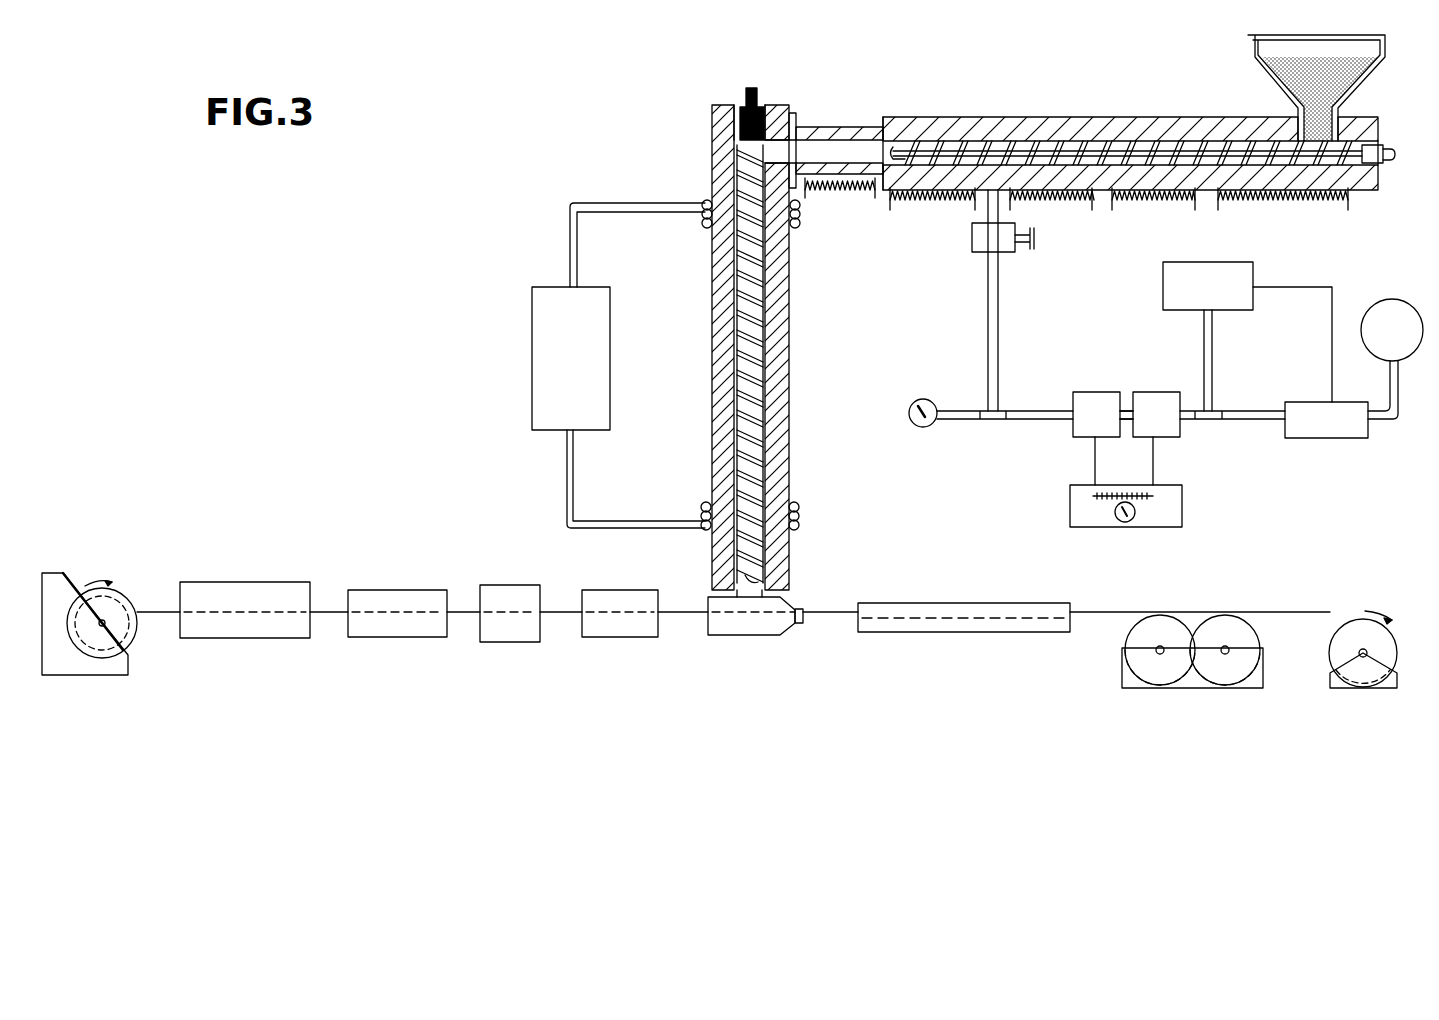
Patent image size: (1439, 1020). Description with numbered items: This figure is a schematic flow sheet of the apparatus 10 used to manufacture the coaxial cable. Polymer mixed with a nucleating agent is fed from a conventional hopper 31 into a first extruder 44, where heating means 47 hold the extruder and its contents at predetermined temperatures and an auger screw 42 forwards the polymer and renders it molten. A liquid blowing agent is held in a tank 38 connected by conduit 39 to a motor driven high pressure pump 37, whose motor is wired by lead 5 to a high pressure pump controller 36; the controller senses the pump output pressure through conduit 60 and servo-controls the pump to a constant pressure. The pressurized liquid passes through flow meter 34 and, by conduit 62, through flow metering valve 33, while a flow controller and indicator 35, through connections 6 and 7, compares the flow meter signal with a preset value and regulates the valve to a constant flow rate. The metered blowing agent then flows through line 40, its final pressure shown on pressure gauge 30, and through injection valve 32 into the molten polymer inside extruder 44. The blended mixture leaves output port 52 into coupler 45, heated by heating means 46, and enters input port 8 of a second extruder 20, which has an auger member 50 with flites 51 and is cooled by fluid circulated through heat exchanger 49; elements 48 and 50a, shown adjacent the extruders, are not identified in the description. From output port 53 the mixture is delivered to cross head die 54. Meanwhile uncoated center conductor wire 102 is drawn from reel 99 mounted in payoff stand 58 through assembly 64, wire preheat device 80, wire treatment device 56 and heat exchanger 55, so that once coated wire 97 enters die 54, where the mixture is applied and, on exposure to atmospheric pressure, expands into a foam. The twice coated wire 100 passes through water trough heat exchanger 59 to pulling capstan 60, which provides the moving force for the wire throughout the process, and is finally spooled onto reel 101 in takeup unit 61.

The apparatus 10 is at (615, 120).
The second extruder 20 is at (717, 104).
The input port 8 is at (806, 126).
The coupler 45 is at (833, 126).
The output port 52 is at (872, 126).
The first extruder 44 is at (1020, 116).
The auger screw 42 is at (1147, 140).
The hopper 31 is at (1252, 58).
The plastic material 50a is at (1334, 99).
The heating means 46 is at (855, 196).
The heating means 47 is at (924, 205).
The guide rollers 48 is at (702, 228).
The heat exchanger 49 is at (618, 365).
The flites 51 is at (737, 322).
The auger member 50 is at (737, 362).
The injection valve 32 is at (972, 247).
The pressure gauge 30 is at (912, 402).
The line 40 is at (1046, 410).
The high pressure pump controller 36 is at (1208, 286).
The lead 5 is at (1332, 287).
The tank 38 is at (1392, 330).
The pulling capstan 60 is at (1204, 350).
The conduit 62 is at (1126, 405).
The flow metering valve 33 is at (1103, 414).
The flow meter 34 is at (1209, 414).
The high pressure pump 37 is at (1326, 420).
The conduit 39 is at (1394, 420).
The connection 7 is at (1092, 458).
The connection 6 is at (1155, 460).
The flow controller and indicator 35 is at (1070, 500).
The payoff stand 58 is at (70, 572).
The reel 99 is at (128, 592).
The uncoated center conductor wire 102 is at (152, 613).
The assembly 64 is at (258, 581).
The wire preheat device 80 is at (400, 589).
The wire treatment device 56 is at (508, 584).
The coated wire 97 is at (560, 610).
The heat exchanger 55 is at (640, 572).
The output port 53 is at (762, 594).
The cross head die 54 is at (755, 636).
The twice coated wire 100 is at (823, 614).
The heat exchanger 59 is at (985, 602).
The reel 101 is at (1392, 634).
The takeup unit 61 is at (1362, 690).